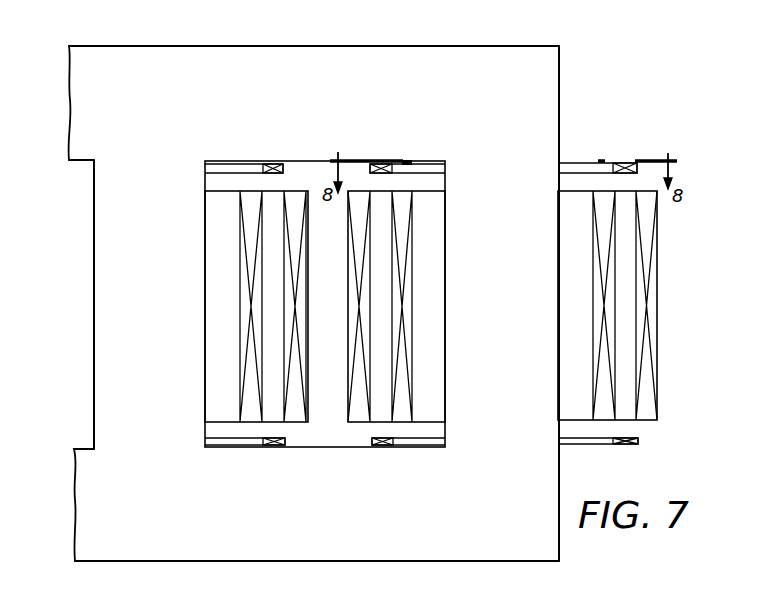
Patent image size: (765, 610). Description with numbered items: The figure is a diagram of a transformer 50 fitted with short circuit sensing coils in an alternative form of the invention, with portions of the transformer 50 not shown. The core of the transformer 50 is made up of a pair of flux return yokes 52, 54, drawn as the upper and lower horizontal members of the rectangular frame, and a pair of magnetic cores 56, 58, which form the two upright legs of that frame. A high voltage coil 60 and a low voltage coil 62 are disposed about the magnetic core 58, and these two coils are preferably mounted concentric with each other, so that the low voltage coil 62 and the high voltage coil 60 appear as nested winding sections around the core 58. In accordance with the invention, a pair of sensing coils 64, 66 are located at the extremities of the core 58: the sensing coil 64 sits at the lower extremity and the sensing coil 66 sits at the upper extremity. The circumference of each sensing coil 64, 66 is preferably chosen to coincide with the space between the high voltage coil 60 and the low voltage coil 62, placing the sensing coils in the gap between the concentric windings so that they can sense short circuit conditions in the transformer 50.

The transformer 50 is at (211, 42).
The flux return yoke 52 is at (328, 52).
The flux return yoke 54 is at (406, 556).
The magnetic core 56 is at (98, 293).
The magnetic core 58 is at (521, 200).
The high voltage coil 60 is at (350, 310).
The low voltage coil 62 is at (395, 243).
The sensing coil 64 is at (585, 444).
The sensing coil 66 is at (585, 165).